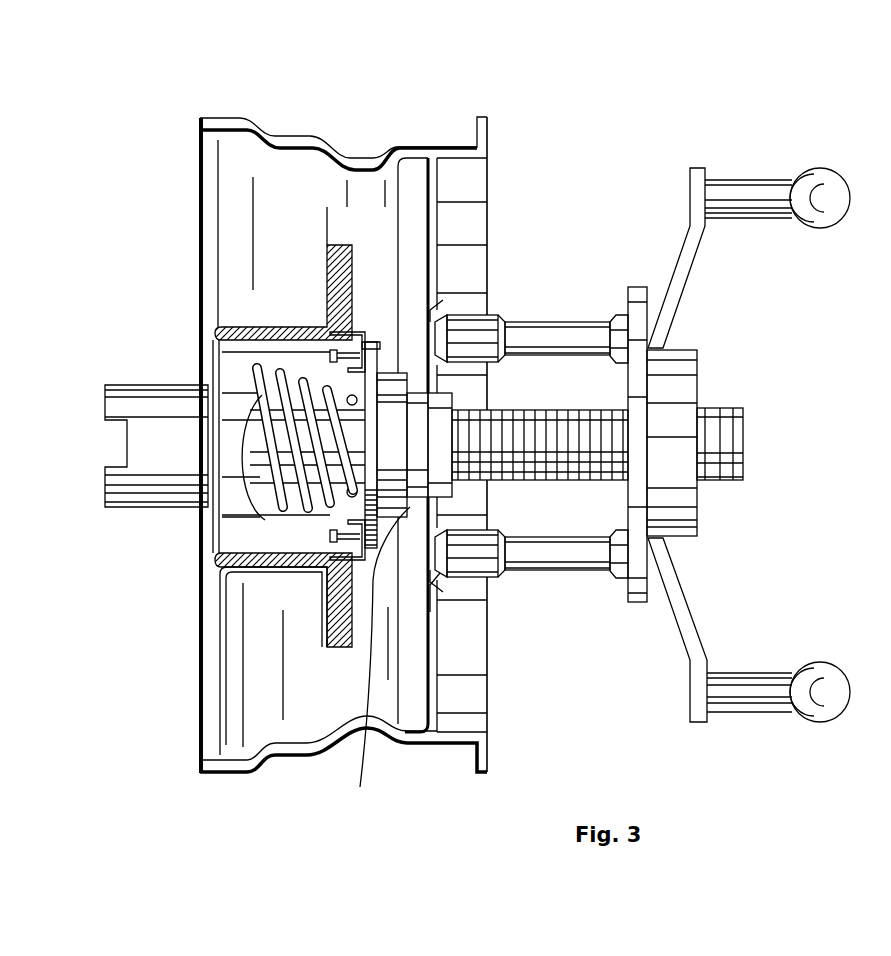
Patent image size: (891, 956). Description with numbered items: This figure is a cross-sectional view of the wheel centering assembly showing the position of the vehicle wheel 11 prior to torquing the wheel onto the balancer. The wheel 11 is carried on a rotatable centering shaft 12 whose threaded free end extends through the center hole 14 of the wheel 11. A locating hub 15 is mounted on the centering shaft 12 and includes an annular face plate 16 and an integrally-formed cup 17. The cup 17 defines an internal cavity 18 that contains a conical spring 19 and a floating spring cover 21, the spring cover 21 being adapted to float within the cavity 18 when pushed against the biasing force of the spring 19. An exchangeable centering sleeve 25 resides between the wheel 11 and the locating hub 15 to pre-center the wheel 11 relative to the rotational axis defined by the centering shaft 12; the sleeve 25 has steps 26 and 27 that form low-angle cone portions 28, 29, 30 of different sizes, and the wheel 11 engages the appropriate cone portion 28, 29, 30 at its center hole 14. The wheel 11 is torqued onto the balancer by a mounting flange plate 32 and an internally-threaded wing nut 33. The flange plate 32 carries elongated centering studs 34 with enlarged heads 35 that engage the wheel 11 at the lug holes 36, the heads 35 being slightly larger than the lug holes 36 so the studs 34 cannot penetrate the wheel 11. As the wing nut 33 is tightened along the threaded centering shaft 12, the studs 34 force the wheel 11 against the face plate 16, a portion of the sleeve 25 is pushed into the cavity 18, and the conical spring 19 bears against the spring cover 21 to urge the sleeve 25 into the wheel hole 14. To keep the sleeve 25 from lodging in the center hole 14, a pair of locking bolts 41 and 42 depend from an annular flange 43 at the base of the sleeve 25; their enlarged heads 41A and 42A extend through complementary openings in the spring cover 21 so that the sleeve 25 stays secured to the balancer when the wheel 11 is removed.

The vehicle wheel 11 is at (440, 180).
The centering shaft 12 is at (740, 413).
The center hole 14 is at (440, 487).
The locating hub 15 is at (216, 215).
The annular face plate 16 is at (353, 625).
The cup 17 is at (247, 548).
The internal cavity 18 is at (262, 365).
The conical spring 19 is at (217, 340).
The floating spring cover 21 is at (363, 508).
The exchangeable centering sleeve 25 is at (390, 367).
The step 26 is at (401, 724).
The step 27 is at (360, 787).
The cone portion 28 is at (450, 405).
The cone portion 29 is at (440, 312).
The cone portion 30 is at (423, 300).
The mounting flange plate 32 is at (634, 287).
The wing nut 33 is at (757, 183).
The centering stud 34 is at (583, 548).
The enlarged head 35 is at (470, 537).
The lug hole 36 is at (435, 612).
The locking bolt 41 is at (368, 343).
The enlarged head 41A is at (333, 207).
The locking bolt 42 is at (327, 585).
The enlarged head 42A is at (233, 587).
The annular flange 43 is at (327, 645).